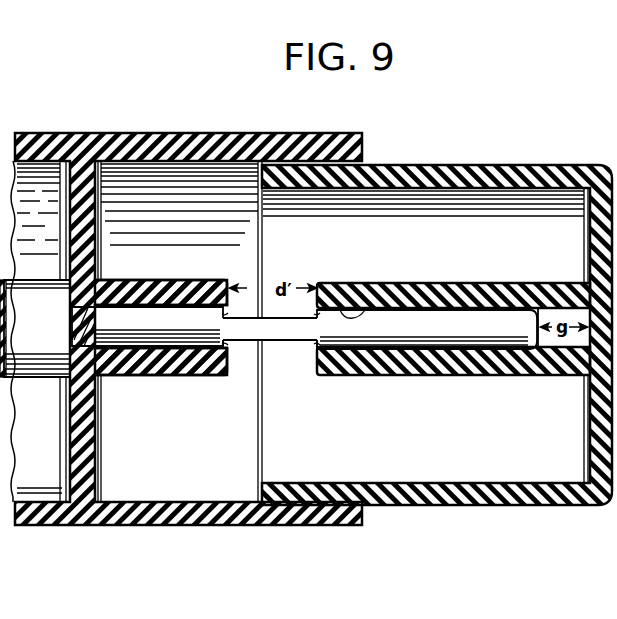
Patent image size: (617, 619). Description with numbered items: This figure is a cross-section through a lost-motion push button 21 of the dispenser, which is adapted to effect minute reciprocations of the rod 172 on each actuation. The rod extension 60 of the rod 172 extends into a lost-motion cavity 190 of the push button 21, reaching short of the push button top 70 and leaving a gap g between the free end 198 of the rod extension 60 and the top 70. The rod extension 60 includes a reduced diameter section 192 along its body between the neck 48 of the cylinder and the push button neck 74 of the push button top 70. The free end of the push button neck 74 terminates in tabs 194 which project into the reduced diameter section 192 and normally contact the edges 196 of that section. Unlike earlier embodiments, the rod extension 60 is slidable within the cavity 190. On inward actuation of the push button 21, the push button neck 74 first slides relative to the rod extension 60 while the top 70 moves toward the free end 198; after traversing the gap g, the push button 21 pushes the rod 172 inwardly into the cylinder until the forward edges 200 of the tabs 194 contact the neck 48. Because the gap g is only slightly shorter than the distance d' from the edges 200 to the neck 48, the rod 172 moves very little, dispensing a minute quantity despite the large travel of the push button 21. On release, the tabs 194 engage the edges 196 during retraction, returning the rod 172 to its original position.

The push button 21 is at (440, 506).
The neck 48 is at (164, 282).
The rod extension 60 is at (188, 322).
The push button top 70 is at (607, 187).
The push button neck 74 is at (468, 296).
The rod 172 is at (39, 357).
The lost-motion cavity 190 is at (548, 313).
The reduced diameter section 192 is at (287, 318).
The tabs 194 is at (332, 333).
The edges 196 is at (358, 332).
The free end 198 is at (530, 378).
The forward edges 200 is at (322, 352).